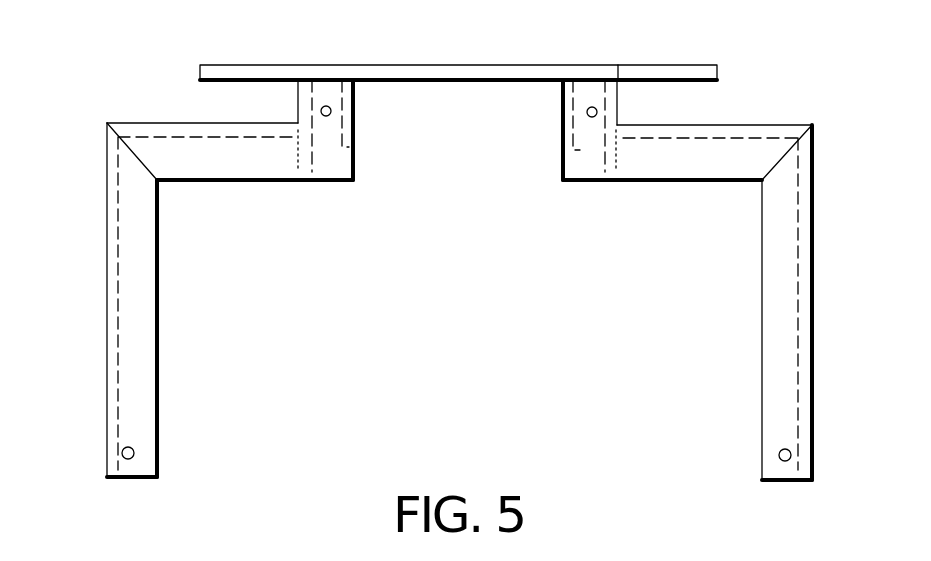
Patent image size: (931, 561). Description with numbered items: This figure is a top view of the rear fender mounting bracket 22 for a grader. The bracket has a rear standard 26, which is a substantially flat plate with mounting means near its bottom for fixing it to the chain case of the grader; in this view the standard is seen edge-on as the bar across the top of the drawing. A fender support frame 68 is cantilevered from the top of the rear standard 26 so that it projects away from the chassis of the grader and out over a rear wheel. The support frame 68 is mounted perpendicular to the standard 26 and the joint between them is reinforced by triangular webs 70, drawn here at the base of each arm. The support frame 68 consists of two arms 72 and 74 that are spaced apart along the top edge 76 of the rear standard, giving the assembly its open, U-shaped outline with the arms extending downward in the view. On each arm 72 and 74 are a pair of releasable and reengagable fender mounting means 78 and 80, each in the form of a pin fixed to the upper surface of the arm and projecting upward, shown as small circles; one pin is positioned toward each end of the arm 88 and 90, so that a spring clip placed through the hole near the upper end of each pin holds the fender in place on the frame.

The rear fender mounting bracket 22 is at (130, 88).
The rear standard 26 is at (674, 60).
The fender support frame 68 is at (103, 352).
The triangular webs 70 is at (357, 132).
The arm 72 is at (140, 248).
The arm 74 is at (790, 227).
The top edge 76 is at (473, 72).
The fender mounting means 78 is at (326, 106).
The fender mounting means 80 is at (133, 448).
The end of the arm 88 is at (140, 480).
The end of the arm 90 is at (773, 483).